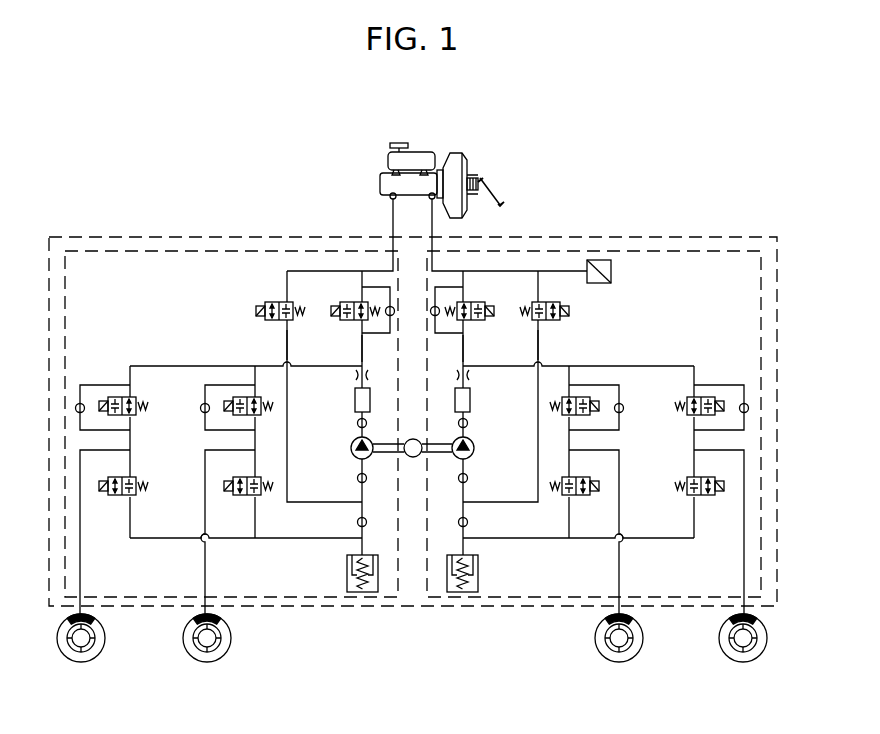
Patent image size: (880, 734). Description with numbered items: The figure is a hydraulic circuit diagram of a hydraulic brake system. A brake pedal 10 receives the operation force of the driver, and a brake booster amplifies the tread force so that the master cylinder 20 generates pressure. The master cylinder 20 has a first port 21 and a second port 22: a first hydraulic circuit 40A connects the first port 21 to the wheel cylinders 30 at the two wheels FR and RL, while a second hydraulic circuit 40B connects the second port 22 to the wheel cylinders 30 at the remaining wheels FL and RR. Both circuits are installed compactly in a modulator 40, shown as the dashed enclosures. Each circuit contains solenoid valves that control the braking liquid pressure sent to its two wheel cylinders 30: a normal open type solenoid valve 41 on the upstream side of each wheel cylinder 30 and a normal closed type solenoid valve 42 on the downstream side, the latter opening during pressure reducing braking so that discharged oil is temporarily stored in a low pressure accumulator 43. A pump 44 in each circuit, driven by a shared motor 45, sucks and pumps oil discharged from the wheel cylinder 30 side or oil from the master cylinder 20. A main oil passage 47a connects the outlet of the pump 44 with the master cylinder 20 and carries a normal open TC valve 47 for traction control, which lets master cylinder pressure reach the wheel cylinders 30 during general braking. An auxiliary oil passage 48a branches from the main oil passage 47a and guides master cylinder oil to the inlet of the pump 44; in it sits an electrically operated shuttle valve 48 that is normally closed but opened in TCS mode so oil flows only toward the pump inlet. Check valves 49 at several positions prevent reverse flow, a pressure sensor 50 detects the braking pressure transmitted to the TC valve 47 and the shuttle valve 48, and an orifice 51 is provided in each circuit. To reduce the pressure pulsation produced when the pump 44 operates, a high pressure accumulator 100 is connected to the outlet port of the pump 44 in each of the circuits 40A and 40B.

The brake pedal 10 is at (492, 180).
The master cylinder 20 is at (380, 186).
The first port 21 is at (431, 200).
The second port 22 is at (391, 200).
The wheel cylinder 30 is at (61, 629).
The modulator 40 is at (280, 236).
The first hydraulic circuit 40A is at (640, 250).
The second hydraulic circuit 40B is at (232, 250).
The normal open type solenoid valve 41 is at (120, 417).
The normal closed type solenoid valve 42 is at (120, 496).
The low pressure accumulator 43 is at (347, 566).
The pump 44 is at (350, 449).
The motor 45 is at (413, 457).
The TC valve 47 is at (346, 301).
The main oil passage 47a is at (463, 348).
The shuttle valve 48 is at (271, 301).
The auxiliary oil passage 48a is at (286, 345).
The check valve 49 is at (367, 517).
The pressure sensor 50 is at (611, 272).
The orifice 51 is at (355, 376).
The high pressure accumulator 100 is at (449, 400).